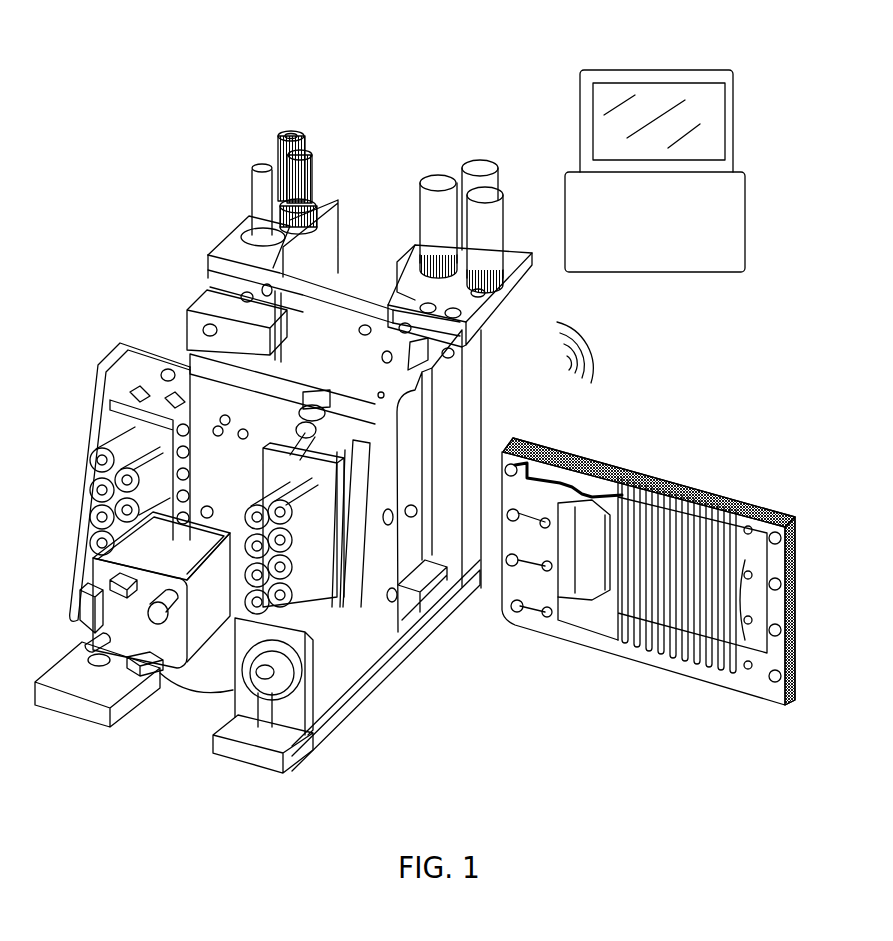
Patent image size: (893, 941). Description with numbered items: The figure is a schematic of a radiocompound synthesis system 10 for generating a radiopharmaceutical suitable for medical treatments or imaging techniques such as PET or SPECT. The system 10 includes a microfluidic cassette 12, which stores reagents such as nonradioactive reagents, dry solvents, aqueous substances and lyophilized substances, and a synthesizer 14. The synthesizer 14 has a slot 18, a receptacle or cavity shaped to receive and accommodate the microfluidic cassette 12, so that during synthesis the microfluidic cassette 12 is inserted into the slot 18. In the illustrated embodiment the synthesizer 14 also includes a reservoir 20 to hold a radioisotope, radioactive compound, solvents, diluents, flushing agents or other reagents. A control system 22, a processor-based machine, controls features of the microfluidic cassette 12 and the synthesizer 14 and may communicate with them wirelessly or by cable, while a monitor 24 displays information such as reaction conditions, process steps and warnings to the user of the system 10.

The radiocompound synthesis system 10 is at (160, 157).
The microfluidic cassette 12 is at (760, 505).
The synthesizer 14 is at (92, 387).
The slot 18 is at (413, 468).
The reservoir 20 is at (503, 222).
The control system 22 is at (745, 216).
The monitor 24 is at (733, 123).